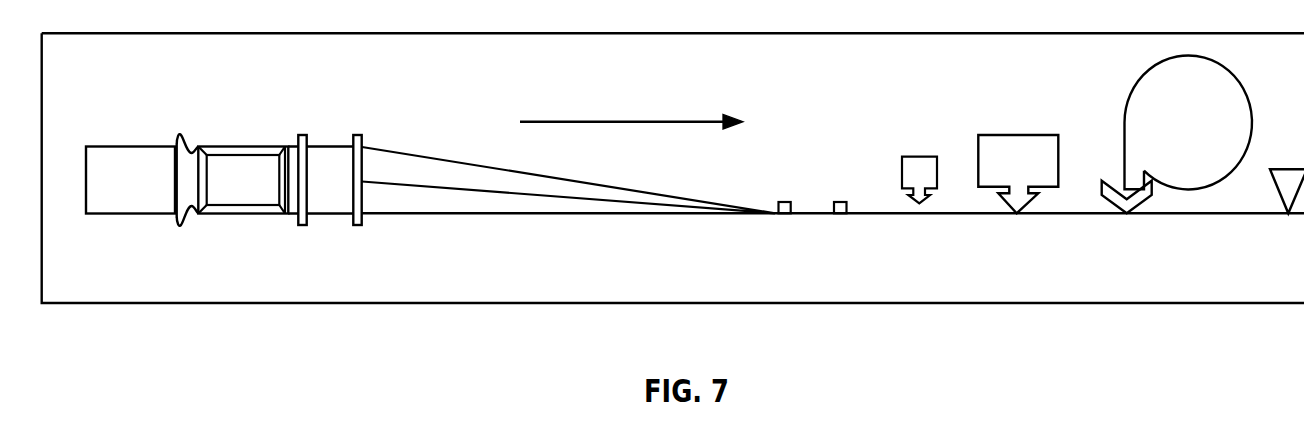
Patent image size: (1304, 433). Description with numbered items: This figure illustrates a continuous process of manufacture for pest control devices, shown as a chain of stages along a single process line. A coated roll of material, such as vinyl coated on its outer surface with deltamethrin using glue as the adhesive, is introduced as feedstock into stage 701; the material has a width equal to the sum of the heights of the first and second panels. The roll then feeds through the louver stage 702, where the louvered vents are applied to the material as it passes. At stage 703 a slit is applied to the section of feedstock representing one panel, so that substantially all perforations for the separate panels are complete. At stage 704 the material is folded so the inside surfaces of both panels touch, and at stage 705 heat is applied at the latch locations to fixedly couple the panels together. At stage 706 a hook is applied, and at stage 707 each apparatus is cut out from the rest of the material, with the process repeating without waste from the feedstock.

The feedstock stage 701 is at (154, 204).
The louver stage 702 is at (253, 198).
The slit stage 703 is at (278, 210).
The folding stage 704 is at (570, 252).
The heat stage 705 is at (1017, 213).
The hook stage 706 is at (1126, 254).
The cutout stage 707 is at (1288, 214).